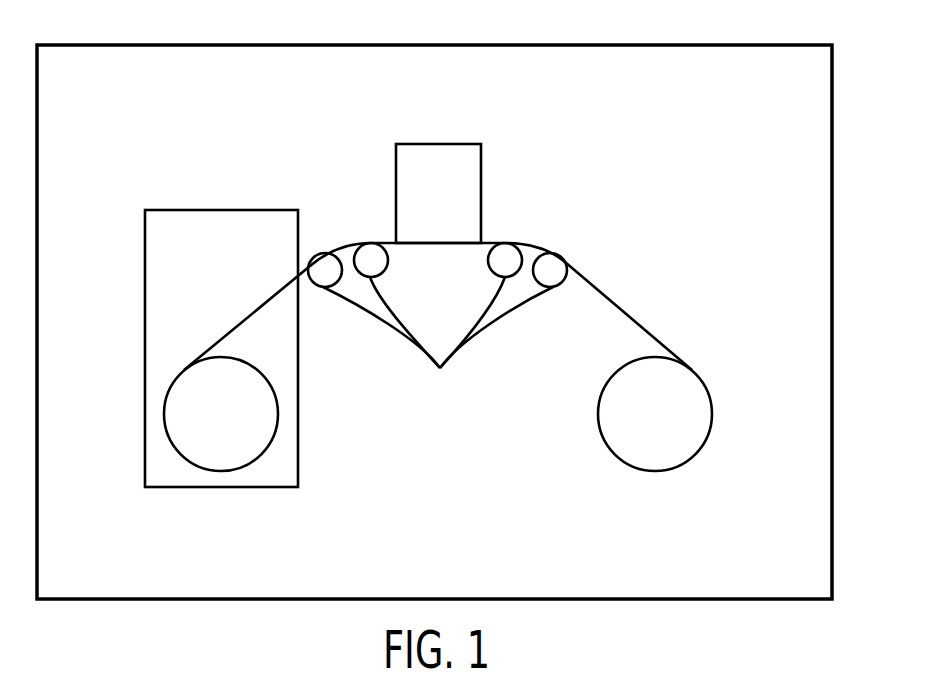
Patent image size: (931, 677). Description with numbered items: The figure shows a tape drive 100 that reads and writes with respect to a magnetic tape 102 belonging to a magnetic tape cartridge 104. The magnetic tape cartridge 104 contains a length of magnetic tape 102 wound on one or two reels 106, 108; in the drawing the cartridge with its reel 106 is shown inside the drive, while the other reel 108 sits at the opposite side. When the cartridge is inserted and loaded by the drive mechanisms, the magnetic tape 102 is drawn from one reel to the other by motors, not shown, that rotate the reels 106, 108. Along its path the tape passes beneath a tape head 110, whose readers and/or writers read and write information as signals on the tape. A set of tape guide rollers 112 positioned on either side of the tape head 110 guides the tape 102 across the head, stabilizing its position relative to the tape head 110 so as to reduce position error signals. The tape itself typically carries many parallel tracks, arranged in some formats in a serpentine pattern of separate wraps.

The tape drive 100 is at (113, 45).
The magnetic tape 102 is at (255, 307).
The magnetic tape cartridge 104 is at (220, 210).
The reel 106 is at (164, 413).
The reel 108 is at (712, 413).
The tape head 110 is at (438, 144).
The tape guide rollers 112 is at (438, 343).